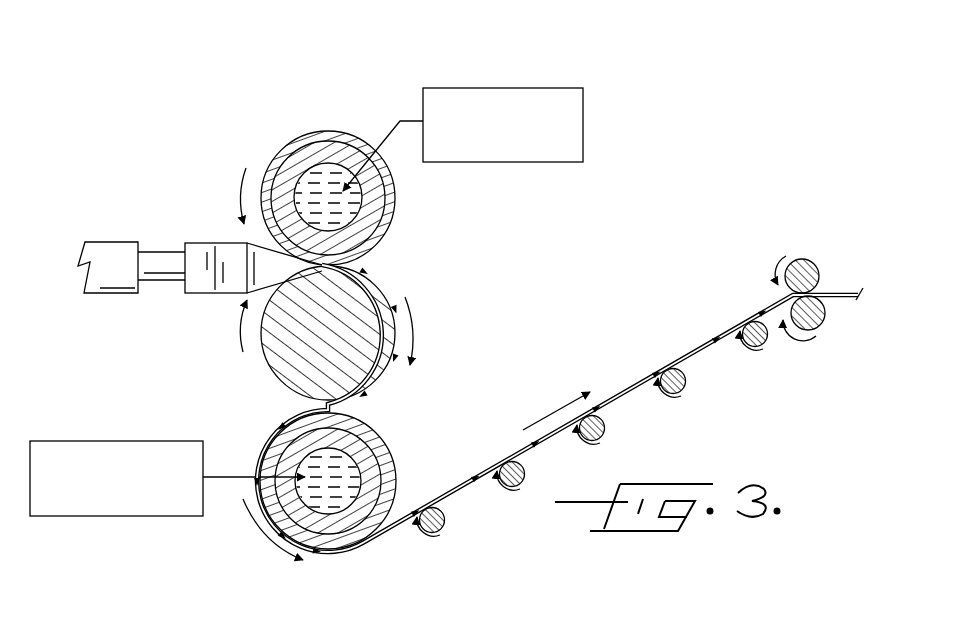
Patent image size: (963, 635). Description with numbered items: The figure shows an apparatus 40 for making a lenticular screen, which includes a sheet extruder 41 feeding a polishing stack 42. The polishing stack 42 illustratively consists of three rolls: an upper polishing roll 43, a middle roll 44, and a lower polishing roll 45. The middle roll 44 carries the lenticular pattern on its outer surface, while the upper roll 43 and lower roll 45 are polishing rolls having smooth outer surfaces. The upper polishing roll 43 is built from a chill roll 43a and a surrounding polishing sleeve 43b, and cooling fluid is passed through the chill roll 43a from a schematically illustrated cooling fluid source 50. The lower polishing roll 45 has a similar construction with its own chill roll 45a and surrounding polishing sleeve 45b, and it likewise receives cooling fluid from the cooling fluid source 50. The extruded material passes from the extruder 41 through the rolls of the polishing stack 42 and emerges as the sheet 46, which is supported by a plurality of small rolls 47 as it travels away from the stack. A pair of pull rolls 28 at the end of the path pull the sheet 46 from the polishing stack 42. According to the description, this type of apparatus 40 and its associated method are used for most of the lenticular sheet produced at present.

The apparatus 40 is at (637, 73).
The sheet extruder 41 is at (207, 294).
The polishing stack 42 is at (432, 289).
The upper polishing roll 43 is at (369, 168).
The chill roll 43a is at (369, 205).
The polishing sleeve 43b is at (378, 227).
The middle roll 44 is at (270, 358).
The lower polishing roll 45 is at (358, 488).
The chill roll 45a is at (331, 517).
The polishing sleeve 45b is at (373, 520).
The sheet 46 is at (630, 388).
The small rolls 47 is at (681, 392).
The nip rollers 28 is at (824, 300).
The cooling fluid source 50 is at (583, 118).